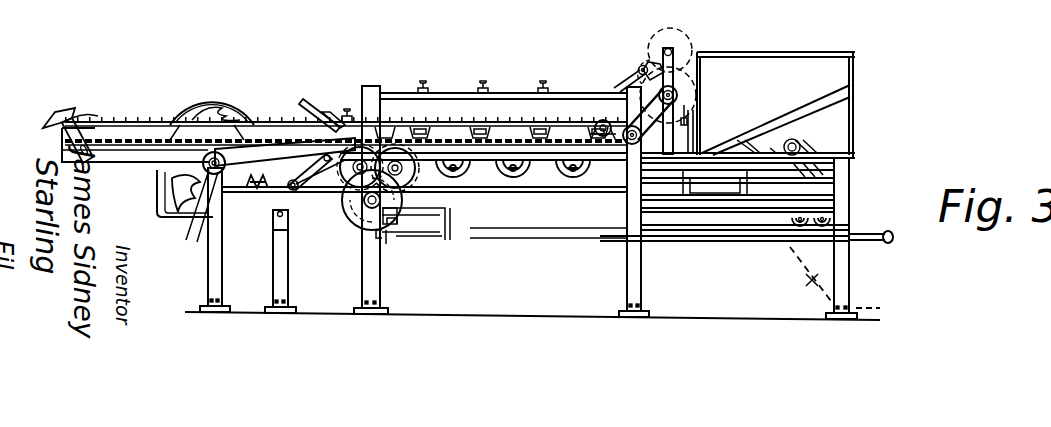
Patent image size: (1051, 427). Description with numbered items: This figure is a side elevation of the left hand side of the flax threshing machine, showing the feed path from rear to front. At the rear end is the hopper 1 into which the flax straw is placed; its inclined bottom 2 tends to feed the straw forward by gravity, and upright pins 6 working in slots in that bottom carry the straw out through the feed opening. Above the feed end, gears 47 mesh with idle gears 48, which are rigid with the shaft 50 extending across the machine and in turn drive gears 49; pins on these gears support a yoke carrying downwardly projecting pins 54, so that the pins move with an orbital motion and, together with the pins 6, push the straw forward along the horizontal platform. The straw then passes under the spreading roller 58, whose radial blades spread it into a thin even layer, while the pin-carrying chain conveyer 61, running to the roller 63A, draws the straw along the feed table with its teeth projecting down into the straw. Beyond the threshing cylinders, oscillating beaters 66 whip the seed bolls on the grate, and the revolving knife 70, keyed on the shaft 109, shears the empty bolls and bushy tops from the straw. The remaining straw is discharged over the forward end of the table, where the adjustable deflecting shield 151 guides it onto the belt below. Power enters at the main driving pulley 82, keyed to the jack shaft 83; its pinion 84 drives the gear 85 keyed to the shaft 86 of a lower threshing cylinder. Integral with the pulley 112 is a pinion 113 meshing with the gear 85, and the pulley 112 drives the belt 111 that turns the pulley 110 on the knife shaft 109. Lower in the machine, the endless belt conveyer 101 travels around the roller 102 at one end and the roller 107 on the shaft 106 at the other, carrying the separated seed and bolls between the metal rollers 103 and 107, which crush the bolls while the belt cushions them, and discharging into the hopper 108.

The hopper 1 is at (860, 75).
The inclined bottom 2 is at (840, 108).
The upright pins 6 is at (694, 139).
The gears 47 is at (662, 42).
The idle gears 48 is at (641, 64).
The gears 49 is at (684, 99).
The shaft 50 is at (637, 70).
The downwardly projecting pins 54 is at (690, 121).
The spreading roller 58 is at (603, 121).
The chain conveyer 61 is at (264, 118).
The roller 63A is at (556, 178).
The beaters 66 is at (305, 100).
The revolving knife 70 is at (181, 188).
The main driving pulley 82 is at (369, 209).
The jack shaft 83 is at (360, 207).
The pinion 84 is at (376, 210).
The gear 85 is at (412, 184).
The shaft 86 is at (415, 164).
The endless belt conveyer 101 is at (711, 236).
The roller 102 is at (278, 222).
The roller 103 is at (822, 228).
The shaft 106 is at (794, 226).
The roller 107 is at (790, 216).
The hopper 108 is at (808, 282).
The shaft 109 is at (212, 172).
The pulley 110 is at (215, 176).
The belt 111 is at (272, 204).
The pulley 112 is at (326, 204).
The pinion 113 is at (334, 118).
The deflecting shield 151 is at (64, 118).